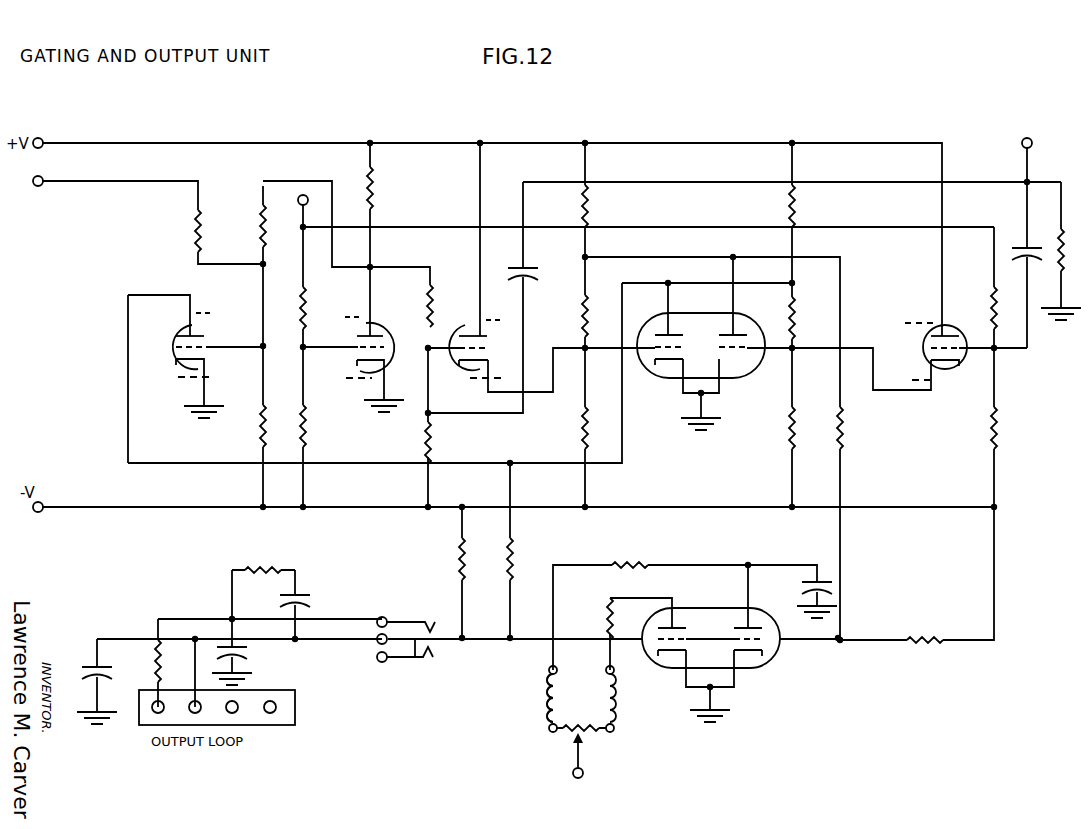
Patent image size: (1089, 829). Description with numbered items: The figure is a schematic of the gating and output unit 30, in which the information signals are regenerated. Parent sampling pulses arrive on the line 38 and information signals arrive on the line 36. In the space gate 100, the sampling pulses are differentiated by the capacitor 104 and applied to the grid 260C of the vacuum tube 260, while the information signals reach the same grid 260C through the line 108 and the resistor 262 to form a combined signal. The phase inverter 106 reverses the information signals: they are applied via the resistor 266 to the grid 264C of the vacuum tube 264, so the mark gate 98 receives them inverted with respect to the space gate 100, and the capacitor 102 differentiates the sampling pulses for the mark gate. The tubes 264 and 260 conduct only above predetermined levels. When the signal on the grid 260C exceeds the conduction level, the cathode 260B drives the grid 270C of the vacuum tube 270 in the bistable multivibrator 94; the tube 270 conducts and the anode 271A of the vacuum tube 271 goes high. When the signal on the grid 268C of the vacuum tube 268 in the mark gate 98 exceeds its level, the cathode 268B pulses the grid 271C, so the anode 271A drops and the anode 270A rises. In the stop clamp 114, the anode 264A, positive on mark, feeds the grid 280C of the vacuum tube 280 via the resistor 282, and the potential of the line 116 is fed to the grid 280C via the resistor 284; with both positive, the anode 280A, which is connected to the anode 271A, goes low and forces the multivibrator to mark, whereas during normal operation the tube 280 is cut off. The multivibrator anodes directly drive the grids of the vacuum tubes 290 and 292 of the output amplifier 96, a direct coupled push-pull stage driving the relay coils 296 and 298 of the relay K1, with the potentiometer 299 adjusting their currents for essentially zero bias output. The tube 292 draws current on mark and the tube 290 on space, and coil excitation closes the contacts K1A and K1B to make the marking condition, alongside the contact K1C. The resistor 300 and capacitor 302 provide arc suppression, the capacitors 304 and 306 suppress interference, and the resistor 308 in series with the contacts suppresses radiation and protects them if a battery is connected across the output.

The gating and output unit 30 is at (158, 85).
The line 38 is at (1029, 137).
The line 36 is at (300, 206).
The line 116 is at (126, 183).
The resistor 284 is at (195, 232).
The resistor 282 is at (261, 220).
The line 108 is at (416, 226).
The capacitor 102 is at (533, 272).
The capacitor 104 is at (1021, 246).
The stop clamp 114 is at (92, 351).
The vacuum tube 280 is at (199, 358).
The anode 280A is at (172, 344).
The grid 280C is at (180, 355).
The resistor 266 is at (302, 300).
The phase inverter 106 is at (349, 421).
The vacuum tube 264 is at (363, 344).
The anode 264A is at (362, 334).
The grid 264C is at (391, 334).
The mark gate 98 is at (506, 454).
The vacuum tube 268 is at (495, 341).
The grid 268C is at (451, 338).
The cathode 268B is at (495, 366).
The bistable multivibrator 94 is at (706, 493).
The vacuum tube 271 is at (669, 341).
The anode 271A is at (658, 326).
The grid 271C is at (684, 340).
The vacuum tube 270 is at (774, 328).
The anode 270A is at (736, 330).
The grid 270C is at (752, 343).
The space gate 100 is at (950, 448).
The vacuum tube 260 is at (921, 365).
The grid 260C is at (930, 340).
The cathode 260B is at (928, 378).
The resistor 262 is at (992, 312).
The resistor 300 is at (259, 568).
The capacitor 302 is at (303, 597).
The capacitor 304 is at (250, 653).
The capacitor 306 is at (84, 675).
The resistor 308 is at (150, 655).
The relay K1 is at (592, 700).
The relay contact K1A is at (416, 652).
The relay contact K1B is at (412, 620).
The relay contact K1C is at (413, 659).
The output amplifier 96 is at (870, 749).
The vacuum tube 290 is at (649, 663).
The vacuum tube 292 is at (774, 660).
The relay coil 296 is at (606, 670).
The relay coil 298 is at (543, 680).
The output distortion adjust control potentiometer 299 is at (590, 733).